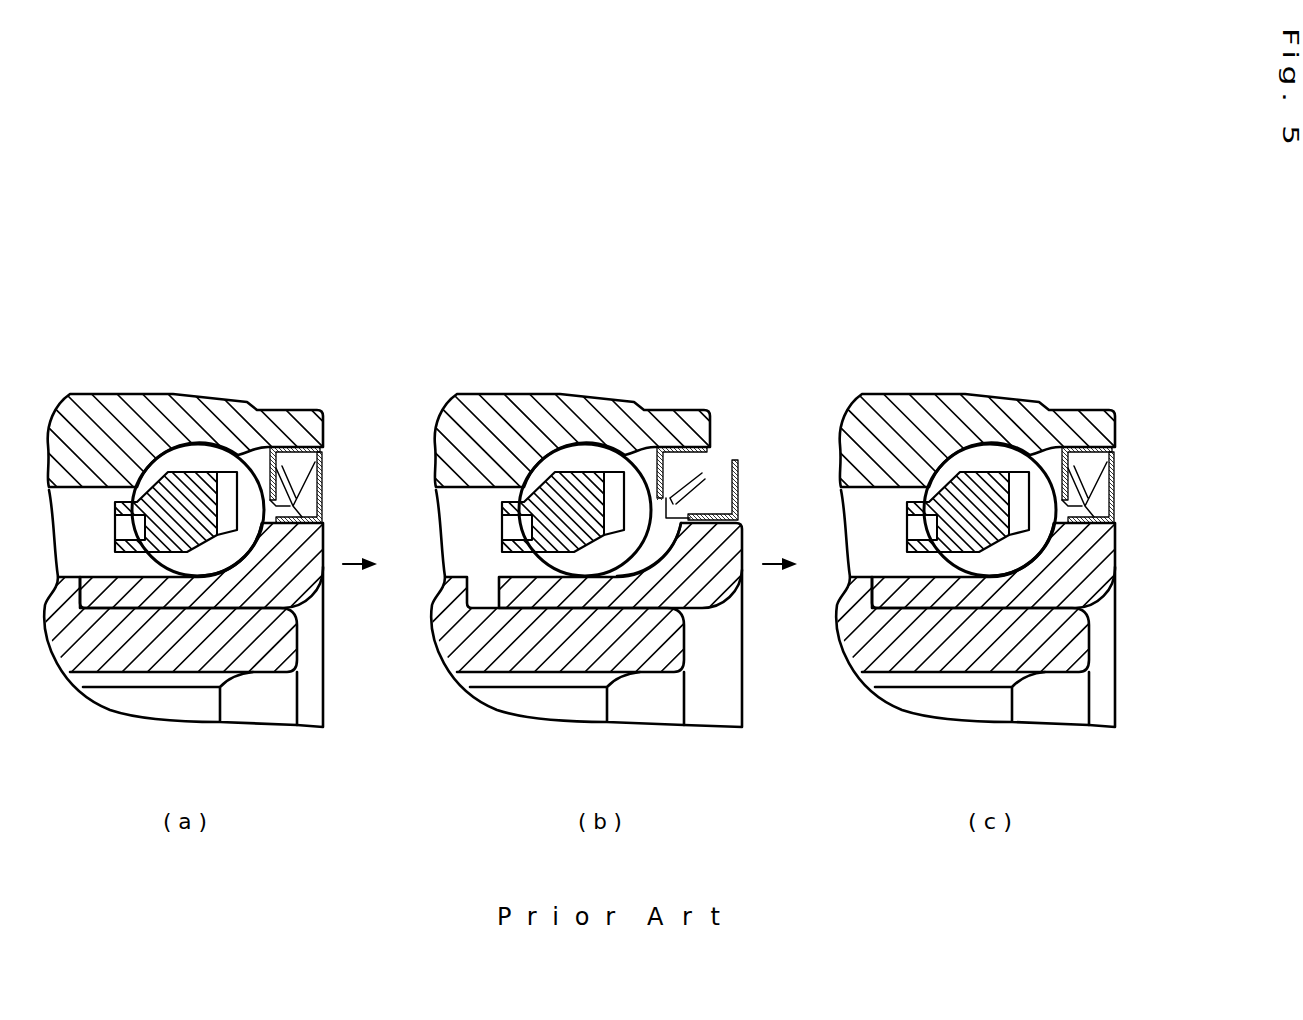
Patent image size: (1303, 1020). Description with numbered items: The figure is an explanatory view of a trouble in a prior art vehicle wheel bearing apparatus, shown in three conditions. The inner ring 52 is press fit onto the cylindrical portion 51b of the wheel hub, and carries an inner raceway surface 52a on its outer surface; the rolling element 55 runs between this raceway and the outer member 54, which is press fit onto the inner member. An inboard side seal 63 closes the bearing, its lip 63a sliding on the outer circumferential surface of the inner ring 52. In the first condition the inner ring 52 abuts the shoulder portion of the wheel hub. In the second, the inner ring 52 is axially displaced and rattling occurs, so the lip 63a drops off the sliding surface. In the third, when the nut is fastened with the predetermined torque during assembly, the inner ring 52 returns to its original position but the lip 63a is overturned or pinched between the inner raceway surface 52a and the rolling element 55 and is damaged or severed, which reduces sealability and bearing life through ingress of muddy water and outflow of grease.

The outer member 54 is at (140, 430).
The rolling element 55 is at (207, 458).
The inner ring 52 is at (285, 570).
The inner raceway surface 52a is at (225, 545).
The cylindrical portion 51b is at (140, 600).
The inboard side seal 63 is at (325, 467).
The lip 63a is at (323, 500).